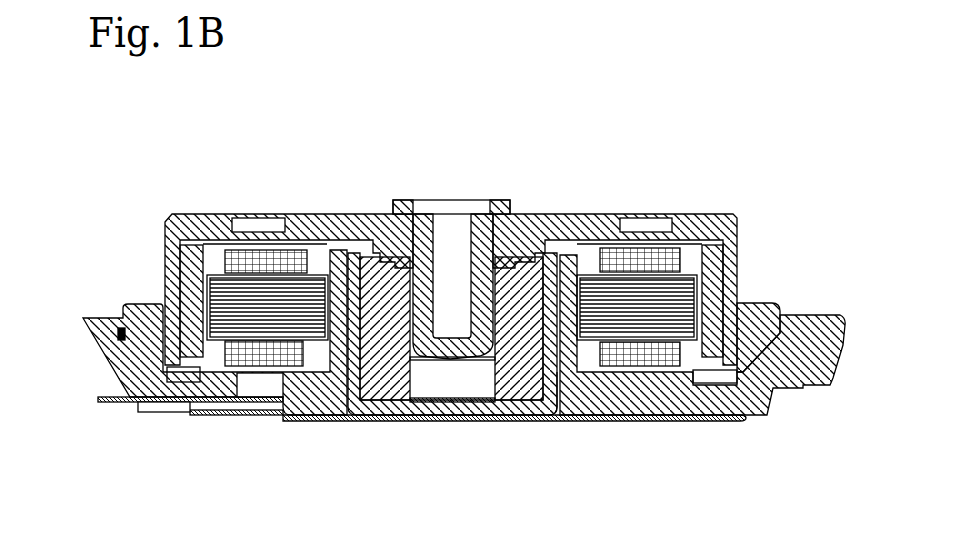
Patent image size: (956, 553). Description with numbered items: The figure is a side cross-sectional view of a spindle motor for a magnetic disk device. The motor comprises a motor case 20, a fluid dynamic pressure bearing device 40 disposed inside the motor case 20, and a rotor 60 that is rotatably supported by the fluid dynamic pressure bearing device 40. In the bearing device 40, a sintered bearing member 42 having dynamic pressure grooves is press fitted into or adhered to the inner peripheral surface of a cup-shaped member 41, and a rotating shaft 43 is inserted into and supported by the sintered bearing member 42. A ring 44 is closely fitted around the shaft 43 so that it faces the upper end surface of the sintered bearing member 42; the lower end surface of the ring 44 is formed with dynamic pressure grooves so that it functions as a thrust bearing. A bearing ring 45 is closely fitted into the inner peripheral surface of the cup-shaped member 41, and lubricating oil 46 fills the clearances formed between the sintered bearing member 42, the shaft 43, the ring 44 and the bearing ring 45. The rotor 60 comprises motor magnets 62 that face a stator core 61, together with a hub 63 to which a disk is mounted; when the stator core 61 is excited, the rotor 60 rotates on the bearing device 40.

The motor case 20 is at (157, 390).
The fluid dynamic pressure bearing device 40 is at (469, 368).
The cup-shaped member 41 is at (356, 400).
The sintered bearing member 42 is at (393, 380).
The rotating shaft 43 is at (476, 345).
The ring 44 is at (503, 263).
The bearing ring 45 is at (572, 424).
The lubricating oil 46 is at (450, 402).
The rotor 60 is at (438, 245).
The stator core 61 is at (238, 287).
The motor magnets 62 is at (192, 253).
The hub 63 is at (180, 222).